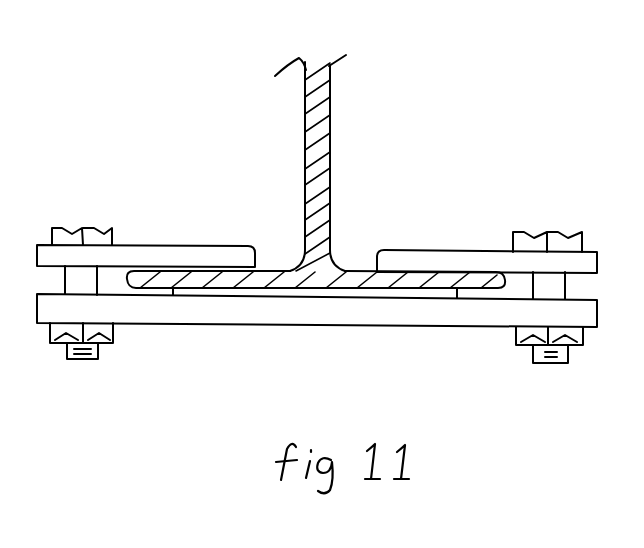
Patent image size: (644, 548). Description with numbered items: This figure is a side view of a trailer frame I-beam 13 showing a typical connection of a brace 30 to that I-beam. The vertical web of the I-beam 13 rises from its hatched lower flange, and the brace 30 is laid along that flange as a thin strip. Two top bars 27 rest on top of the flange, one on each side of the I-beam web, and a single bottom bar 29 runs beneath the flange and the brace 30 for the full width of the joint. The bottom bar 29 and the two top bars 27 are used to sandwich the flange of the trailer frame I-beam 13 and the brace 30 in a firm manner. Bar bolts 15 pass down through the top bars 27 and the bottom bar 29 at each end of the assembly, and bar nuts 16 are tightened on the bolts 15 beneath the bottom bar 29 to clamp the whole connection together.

The trailer frame I-beam 13 is at (322, 140).
The top bar 27 is at (165, 260).
The bottom bar 29 is at (291, 312).
The brace 30 is at (367, 293).
The bar bolt 15 is at (73, 237).
The bar nut 16 is at (110, 329).